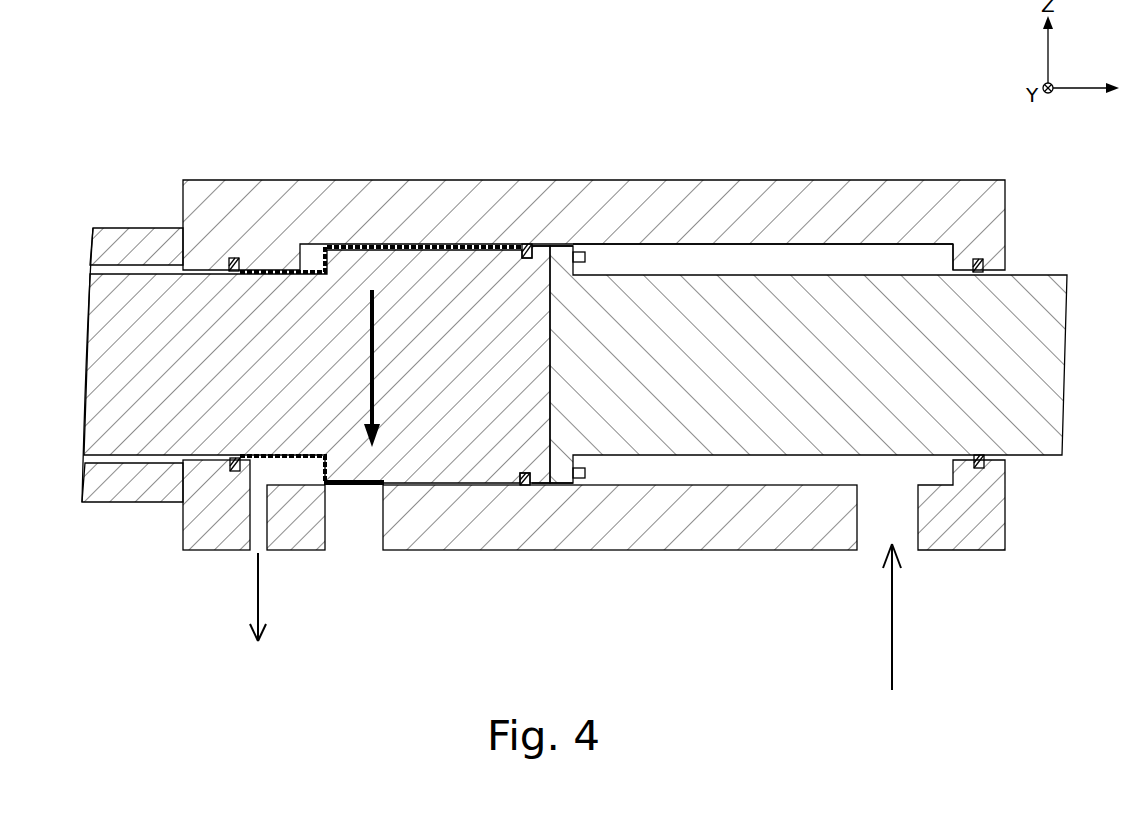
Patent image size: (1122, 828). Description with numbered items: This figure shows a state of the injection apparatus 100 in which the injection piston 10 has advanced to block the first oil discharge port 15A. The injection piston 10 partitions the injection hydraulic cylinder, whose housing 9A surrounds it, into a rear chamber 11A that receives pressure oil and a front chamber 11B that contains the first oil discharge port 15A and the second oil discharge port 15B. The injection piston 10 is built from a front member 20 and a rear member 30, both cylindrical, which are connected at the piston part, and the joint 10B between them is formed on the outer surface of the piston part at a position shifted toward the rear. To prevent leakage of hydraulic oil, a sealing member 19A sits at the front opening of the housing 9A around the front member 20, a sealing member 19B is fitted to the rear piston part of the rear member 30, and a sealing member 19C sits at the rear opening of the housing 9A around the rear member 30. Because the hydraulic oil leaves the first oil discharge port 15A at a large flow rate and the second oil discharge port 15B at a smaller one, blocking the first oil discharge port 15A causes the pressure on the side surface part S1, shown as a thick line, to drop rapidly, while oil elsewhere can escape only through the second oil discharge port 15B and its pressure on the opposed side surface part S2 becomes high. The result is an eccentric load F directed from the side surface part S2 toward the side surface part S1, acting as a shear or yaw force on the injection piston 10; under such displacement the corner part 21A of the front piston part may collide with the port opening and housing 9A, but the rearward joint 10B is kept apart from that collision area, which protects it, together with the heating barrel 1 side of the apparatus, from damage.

The injection apparatus 100 is at (134, 112).
The heating barrel 1 is at (137, 226).
The housing 9A is at (481, 193).
The rear chamber 11A is at (830, 257).
The front chamber 11B is at (270, 478).
The injection piston 10 is at (827, 72).
The front member 20 is at (542, 262).
The rear member 30 is at (751, 284).
The joint 10B is at (555, 548).
The sealing member 19A is at (241, 258).
The sealing member 19B is at (526, 243).
The sealing member 19C is at (985, 262).
The side surface part S1 is at (370, 488).
The side surface part S2 is at (337, 247).
The first oil discharge port 15A is at (383, 558).
The second oil discharge port 15B is at (249, 557).
The corner part 21A is at (330, 487).
The eccentric load F is at (380, 368).